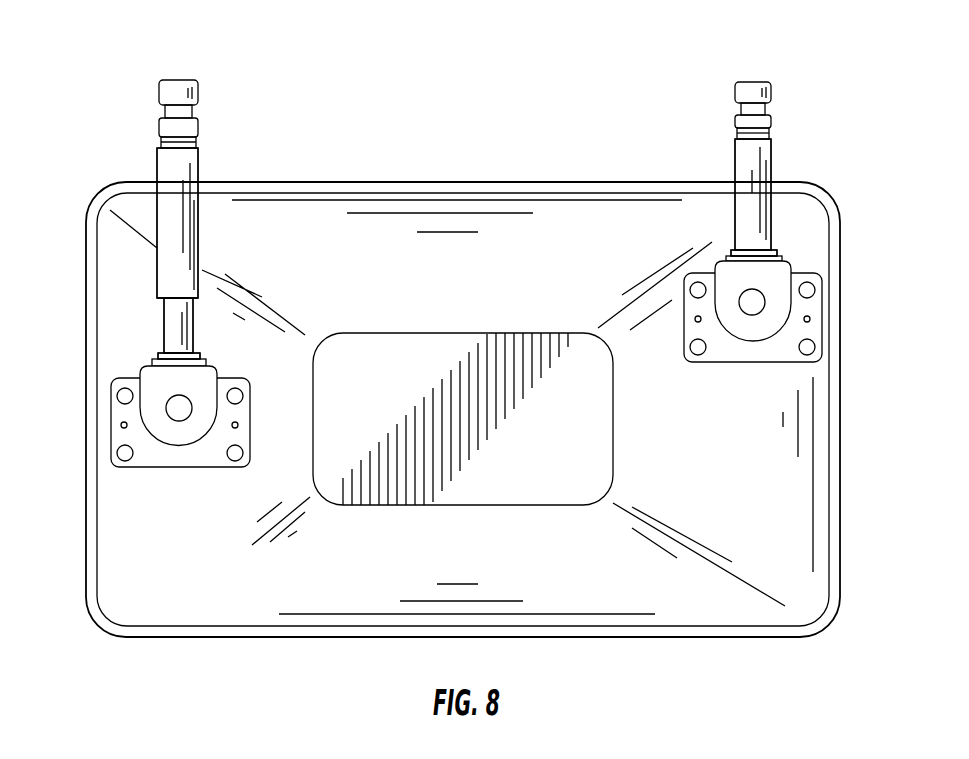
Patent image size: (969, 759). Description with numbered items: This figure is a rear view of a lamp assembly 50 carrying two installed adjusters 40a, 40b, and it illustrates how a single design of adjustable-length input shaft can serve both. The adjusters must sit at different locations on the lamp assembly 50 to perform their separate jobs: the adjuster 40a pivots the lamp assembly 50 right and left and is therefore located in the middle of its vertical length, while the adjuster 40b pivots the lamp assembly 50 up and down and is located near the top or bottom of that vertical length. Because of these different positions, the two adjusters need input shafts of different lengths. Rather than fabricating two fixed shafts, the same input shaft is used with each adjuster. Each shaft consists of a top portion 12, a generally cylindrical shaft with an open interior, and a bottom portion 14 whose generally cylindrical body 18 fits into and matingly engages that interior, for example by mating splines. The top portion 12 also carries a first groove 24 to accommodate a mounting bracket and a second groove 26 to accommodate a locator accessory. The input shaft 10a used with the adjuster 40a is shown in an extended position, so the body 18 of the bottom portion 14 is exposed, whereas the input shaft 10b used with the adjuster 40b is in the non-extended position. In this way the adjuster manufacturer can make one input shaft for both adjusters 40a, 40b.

The input shaft 10a is at (132, 158).
The input shaft 10b is at (777, 158).
The top portion 12 is at (170, 232).
The bottom portion 14 is at (153, 313).
The body 18 is at (170, 330).
The first groove 24 is at (197, 145).
The second groove 26 is at (183, 112).
The adjuster 40a is at (152, 415).
The adjuster 40b is at (773, 312).
The lamp assembly 50 is at (632, 582).